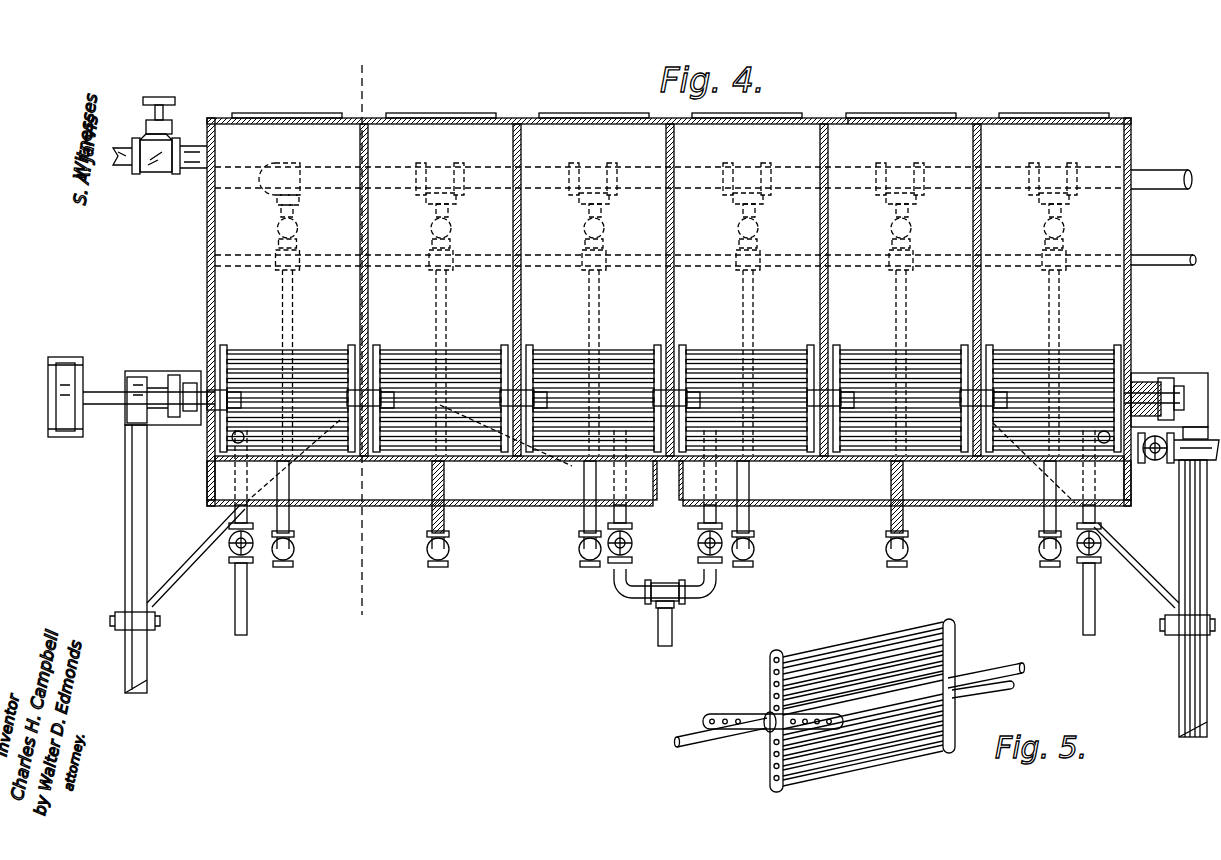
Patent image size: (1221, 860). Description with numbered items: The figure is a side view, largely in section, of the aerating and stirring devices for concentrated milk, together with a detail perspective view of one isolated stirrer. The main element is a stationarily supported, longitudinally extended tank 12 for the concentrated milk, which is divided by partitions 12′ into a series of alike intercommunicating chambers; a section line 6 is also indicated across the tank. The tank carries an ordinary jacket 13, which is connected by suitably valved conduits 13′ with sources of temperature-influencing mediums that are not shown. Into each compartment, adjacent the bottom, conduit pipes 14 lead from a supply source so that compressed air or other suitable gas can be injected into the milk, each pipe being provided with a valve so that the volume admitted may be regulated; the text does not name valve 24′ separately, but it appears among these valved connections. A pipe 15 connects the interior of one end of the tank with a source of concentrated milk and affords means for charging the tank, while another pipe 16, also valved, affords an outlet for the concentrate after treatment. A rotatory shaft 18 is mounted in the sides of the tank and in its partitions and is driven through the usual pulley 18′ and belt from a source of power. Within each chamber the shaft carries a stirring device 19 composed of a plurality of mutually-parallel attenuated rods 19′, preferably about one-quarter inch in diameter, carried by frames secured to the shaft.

In FIG. 4, the section line 6 is at (365, 346).
In FIG. 4, the tank 12 is at (1132, 230).
In FIG. 4, the partitions 12′ is at (1105, 148).
In FIG. 4, the jacket 13 is at (390, 508).
In FIG. 4, the valved conduits 13′ is at (680, 600).
In FIG. 4, the conduit pipes 14 is at (583, 522).
In FIG. 4, the pipe 15 is at (150, 176).
In FIG. 4, the pipe 16 is at (1147, 465).
In FIG. 4, the rotatory shaft 18 is at (100, 392).
In FIG. 5, the rotatory shaft 18 is at (703, 728).
In FIG. 4, the pulley 18′ is at (98, 395).
In FIG. 4, the stirring device 19 is at (1045, 350).
In FIG. 5, the stirring device 19 is at (863, 704).
In FIG. 4, the rods 19′ is at (1082, 358).
In FIG. 5, the rods 19′ is at (912, 645).
In FIG. 4, the branch valves 24′ is at (605, 228).